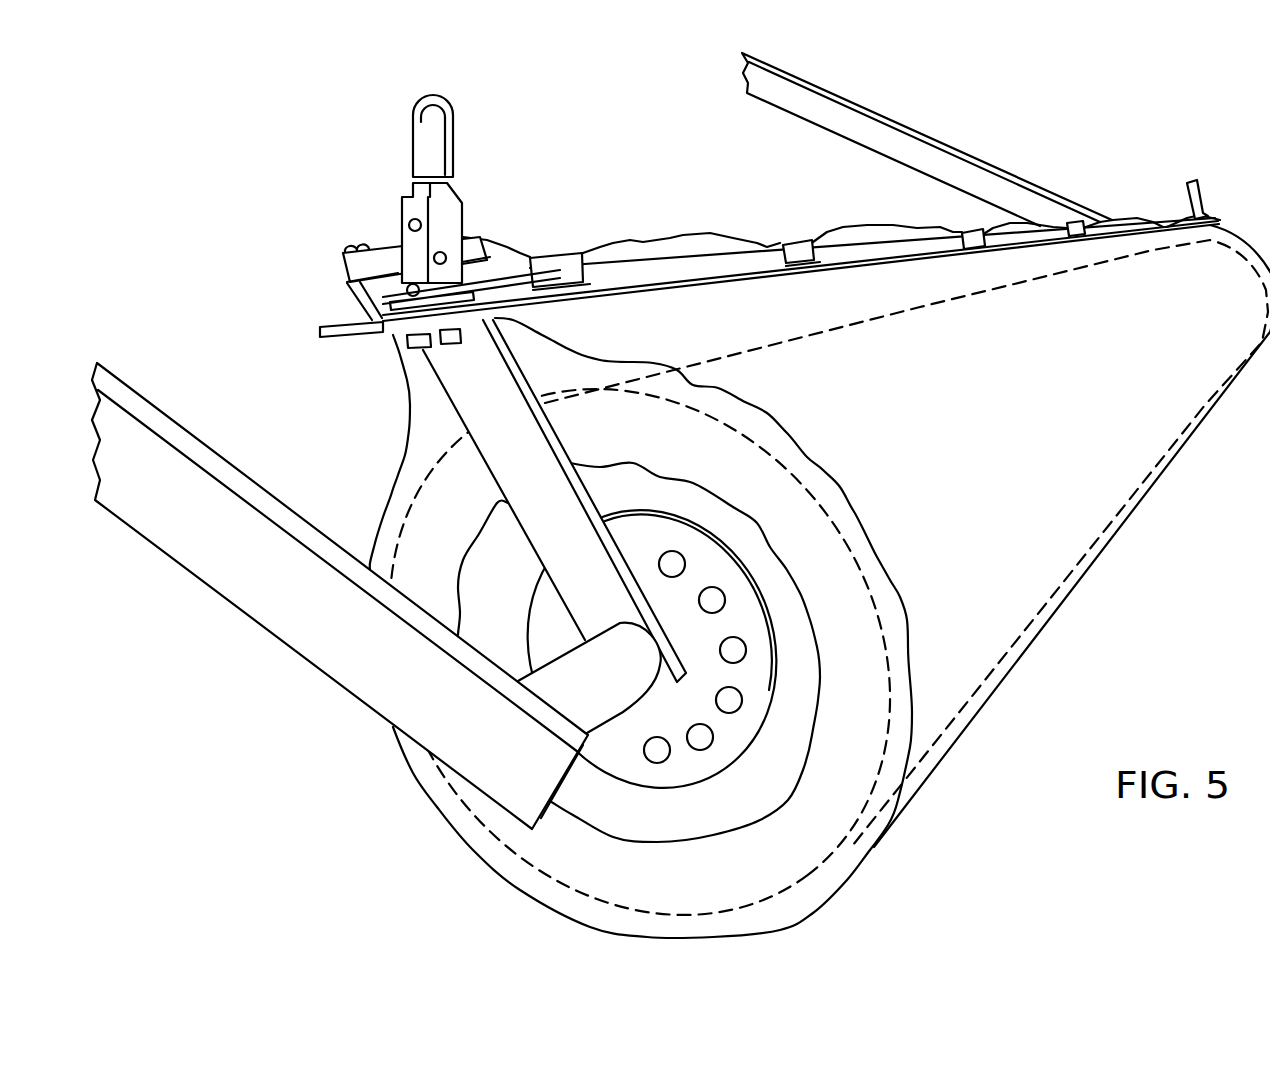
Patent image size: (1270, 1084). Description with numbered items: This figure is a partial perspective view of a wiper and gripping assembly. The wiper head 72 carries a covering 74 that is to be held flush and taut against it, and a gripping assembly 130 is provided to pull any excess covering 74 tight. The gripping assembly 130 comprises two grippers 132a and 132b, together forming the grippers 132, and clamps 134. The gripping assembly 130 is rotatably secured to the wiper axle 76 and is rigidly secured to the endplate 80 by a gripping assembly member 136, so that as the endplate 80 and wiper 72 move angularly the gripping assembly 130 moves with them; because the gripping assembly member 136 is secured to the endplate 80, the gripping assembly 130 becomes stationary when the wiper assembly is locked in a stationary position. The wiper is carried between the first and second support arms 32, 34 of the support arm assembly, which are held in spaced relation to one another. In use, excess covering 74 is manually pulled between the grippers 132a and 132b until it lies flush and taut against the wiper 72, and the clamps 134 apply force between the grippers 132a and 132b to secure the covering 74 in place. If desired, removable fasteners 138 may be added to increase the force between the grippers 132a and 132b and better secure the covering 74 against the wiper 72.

The first support arm 32 is at (250, 612).
The second support arm 34 is at (796, 110).
The wiper head 72 is at (822, 867).
The covering 74 is at (680, 240).
The wiper axle 76 is at (603, 643).
The endplate 80 is at (775, 697).
The gripping assembly 130 is at (326, 193).
The grippers 132 is at (389, 327).
The first gripper 132a is at (380, 333).
The second gripper 132b is at (327, 353).
The clamps 134 is at (1190, 180).
The gripping assembly member 136 is at (503, 478).
The removable fasteners 138 is at (790, 242).